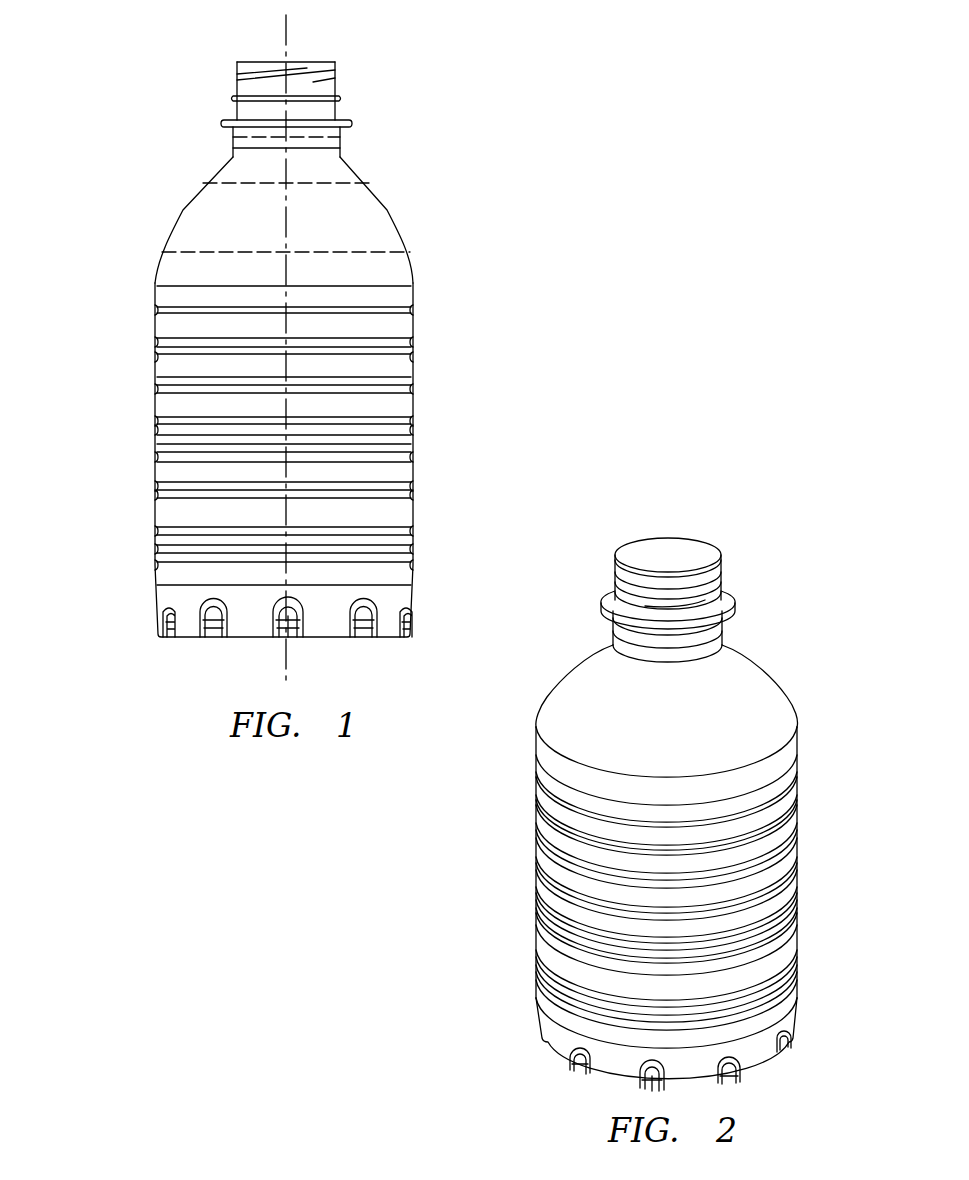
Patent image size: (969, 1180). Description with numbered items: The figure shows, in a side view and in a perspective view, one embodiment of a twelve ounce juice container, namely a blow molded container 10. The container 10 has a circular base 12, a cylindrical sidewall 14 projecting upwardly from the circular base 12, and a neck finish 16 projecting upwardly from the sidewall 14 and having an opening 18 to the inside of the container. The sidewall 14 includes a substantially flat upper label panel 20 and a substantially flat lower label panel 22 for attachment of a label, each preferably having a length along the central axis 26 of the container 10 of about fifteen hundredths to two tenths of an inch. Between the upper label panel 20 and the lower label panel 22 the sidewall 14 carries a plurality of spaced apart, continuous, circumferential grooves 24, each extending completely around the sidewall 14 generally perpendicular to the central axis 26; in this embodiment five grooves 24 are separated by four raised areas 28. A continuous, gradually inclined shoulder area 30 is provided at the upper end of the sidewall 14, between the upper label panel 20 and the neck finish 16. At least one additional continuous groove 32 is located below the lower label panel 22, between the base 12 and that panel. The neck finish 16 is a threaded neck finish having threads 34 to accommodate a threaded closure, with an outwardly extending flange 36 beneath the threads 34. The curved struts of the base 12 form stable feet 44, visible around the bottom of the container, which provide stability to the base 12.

In FIG. 1, the blow molded container 10 is at (100, 303).
In FIG. 2, the blow molded container 10 is at (485, 887).
In FIG. 1, the circular base 12 is at (163, 624).
In FIG. 2, the circular base 12 is at (540, 1052).
In FIG. 1, the cylindrical sidewall 14 is at (160, 436).
In FIG. 2, the cylindrical sidewall 14 is at (790, 865).
In FIG. 1, the neck finish 16 is at (237, 88).
In FIG. 2, the neck finish 16 is at (722, 590).
In FIG. 1, the opening 18 is at (267, 62).
In FIG. 2, the opening 18 is at (655, 563).
In FIG. 1, the upper label panel 20 is at (403, 328).
In FIG. 2, the upper label panel 20 is at (785, 795).
In FIG. 1, the lower label panel 22 is at (405, 516).
In FIG. 2, the lower label panel 22 is at (790, 945).
In FIG. 1, the circumferential grooves 24 is at (160, 383).
In FIG. 1, the central axis 26 is at (288, 22).
In FIG. 1, the raised areas 28 is at (413, 404).
In FIG. 1, the shoulder area 30 is at (385, 207).
In FIG. 2, the shoulder area 30 is at (765, 697).
In FIG. 1, the additional continuous groove 32 is at (410, 552).
In FIG. 1, the threads 34 is at (335, 72).
In FIG. 1, the flange 36 is at (352, 123).
In FIG. 2, the flange 36 is at (735, 615).
In FIG. 2, the feet 44 is at (760, 1052).